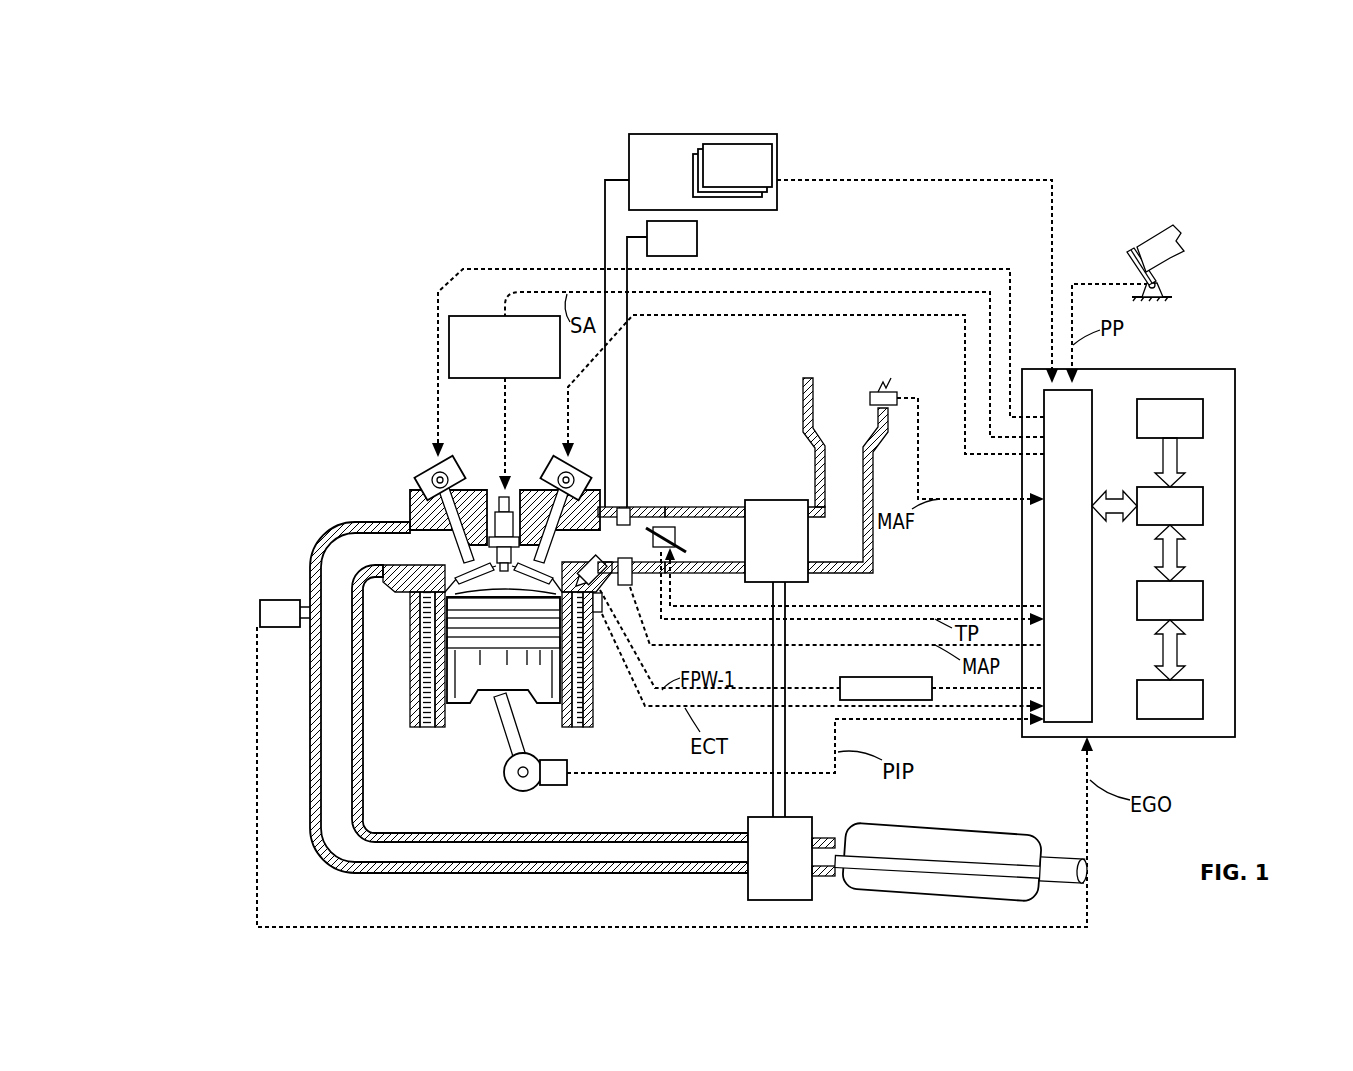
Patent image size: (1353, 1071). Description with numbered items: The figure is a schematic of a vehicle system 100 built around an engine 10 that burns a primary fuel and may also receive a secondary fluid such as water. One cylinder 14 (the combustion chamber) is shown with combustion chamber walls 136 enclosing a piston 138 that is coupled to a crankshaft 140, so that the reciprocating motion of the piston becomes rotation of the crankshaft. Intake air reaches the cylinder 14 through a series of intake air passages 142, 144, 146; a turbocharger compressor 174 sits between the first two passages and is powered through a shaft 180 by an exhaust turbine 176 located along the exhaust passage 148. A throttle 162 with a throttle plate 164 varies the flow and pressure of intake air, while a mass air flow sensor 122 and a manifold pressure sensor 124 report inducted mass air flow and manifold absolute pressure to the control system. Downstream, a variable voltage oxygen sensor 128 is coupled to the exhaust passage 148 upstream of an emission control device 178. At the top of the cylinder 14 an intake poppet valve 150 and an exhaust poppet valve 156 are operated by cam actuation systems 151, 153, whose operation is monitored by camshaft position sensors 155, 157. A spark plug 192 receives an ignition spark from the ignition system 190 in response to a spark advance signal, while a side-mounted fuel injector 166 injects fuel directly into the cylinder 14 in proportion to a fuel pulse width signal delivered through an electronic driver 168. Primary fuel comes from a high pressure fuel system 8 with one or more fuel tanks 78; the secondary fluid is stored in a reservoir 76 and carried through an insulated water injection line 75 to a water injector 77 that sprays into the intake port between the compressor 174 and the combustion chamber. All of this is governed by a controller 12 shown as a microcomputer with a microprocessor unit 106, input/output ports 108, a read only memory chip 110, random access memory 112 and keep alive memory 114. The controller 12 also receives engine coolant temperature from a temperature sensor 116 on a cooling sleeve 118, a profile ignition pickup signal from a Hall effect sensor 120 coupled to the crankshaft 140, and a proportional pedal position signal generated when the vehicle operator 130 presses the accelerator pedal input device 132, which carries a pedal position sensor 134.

The vehicle system 100 is at (138, 168).
The high pressure fuel system 8 is at (718, 172).
The fuel tanks 78 is at (732, 170).
The reservoir 76 is at (672, 238).
The input device 132 is at (1130, 262).
The vehicle operator 130 is at (1172, 261).
The pedal position sensor 134 is at (1167, 285).
The ignition system 190 is at (460, 316).
The engine 10 is at (506, 588).
The insulated water injection line 75 is at (628, 392).
The camshaft position sensor 155 is at (576, 500).
The cam actuation system 153 is at (447, 472).
The cam actuation system 151 is at (555, 470).
The camshaft position sensor 157 is at (430, 472).
The exhaust poppet valve 156 is at (460, 556).
The spark plug 192 is at (499, 528).
The intake poppet valve 150 is at (508, 556).
The water injector 77 is at (630, 505).
The throttle 162 is at (668, 527).
The throttle plate 164 is at (680, 545).
The compressor 174 is at (768, 500).
The intake air passage 142 is at (831, 442).
The mass air flow sensor 122 is at (887, 388).
The input/output ports 108 is at (1094, 398).
The controller 12 is at (1167, 540).
The read only memory chip 110 is at (1205, 415).
The microprocessor unit 106 is at (1205, 505).
The random access memory 112 is at (1205, 600).
The keep alive memory 114 is at (1205, 698).
The exhaust passage 148 is at (529, 697).
The intake air passage 146 is at (631, 540).
The intake air passage 144 is at (776, 490).
The fuel injector 166 is at (581, 567).
The variable voltage oxygen sensor 128 is at (259, 600).
The cylinder 14 is at (420, 597).
The manifold pressure sensor 124 is at (632, 590).
The electronic driver 168 is at (850, 677).
The combustion chamber walls 136 is at (445, 727).
The piston 138 is at (487, 675).
The crankshaft 140 is at (515, 785).
The Hall effect sensor 120 is at (560, 788).
The cooling sleeve 118 is at (592, 700).
The temperature sensor 116 is at (602, 618).
The shaft 180 is at (786, 790).
The emission control device 178 is at (1000, 830).
The exhaust turbine 176 is at (748, 890).